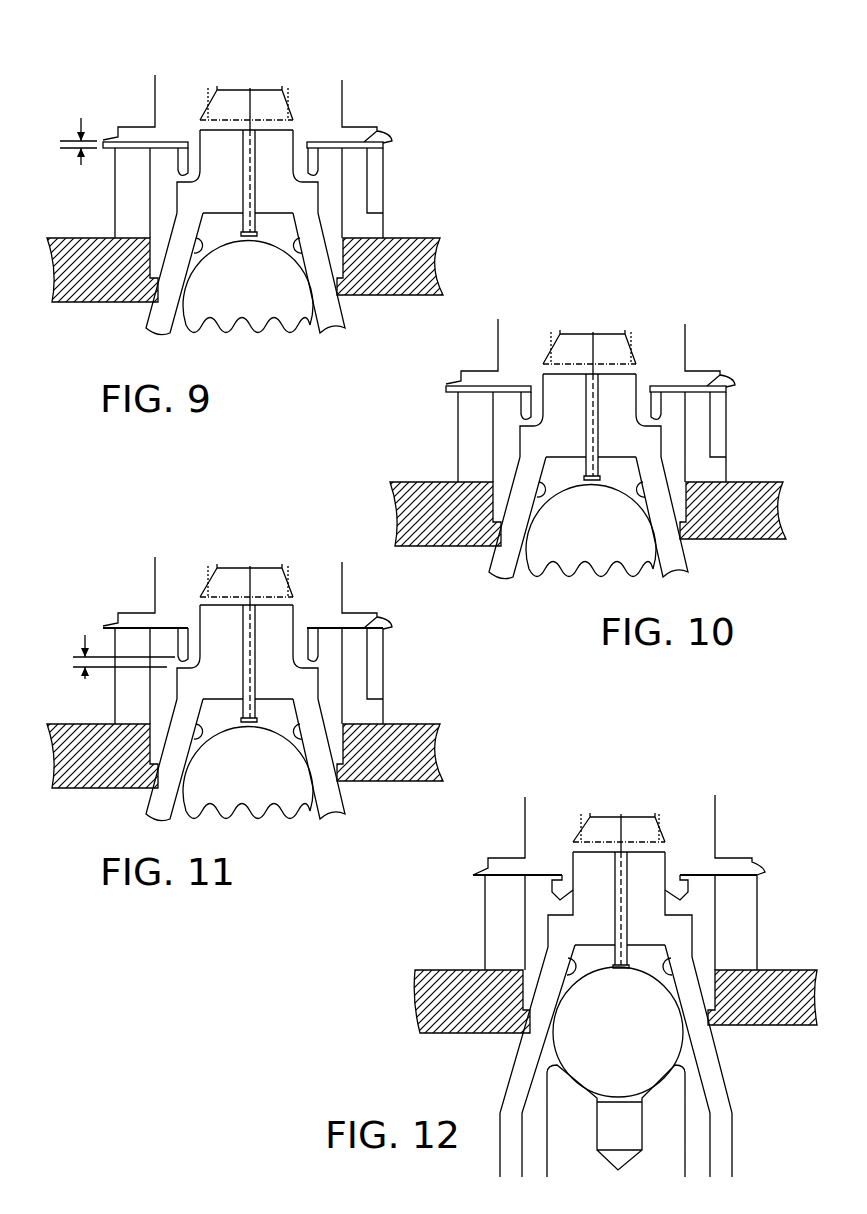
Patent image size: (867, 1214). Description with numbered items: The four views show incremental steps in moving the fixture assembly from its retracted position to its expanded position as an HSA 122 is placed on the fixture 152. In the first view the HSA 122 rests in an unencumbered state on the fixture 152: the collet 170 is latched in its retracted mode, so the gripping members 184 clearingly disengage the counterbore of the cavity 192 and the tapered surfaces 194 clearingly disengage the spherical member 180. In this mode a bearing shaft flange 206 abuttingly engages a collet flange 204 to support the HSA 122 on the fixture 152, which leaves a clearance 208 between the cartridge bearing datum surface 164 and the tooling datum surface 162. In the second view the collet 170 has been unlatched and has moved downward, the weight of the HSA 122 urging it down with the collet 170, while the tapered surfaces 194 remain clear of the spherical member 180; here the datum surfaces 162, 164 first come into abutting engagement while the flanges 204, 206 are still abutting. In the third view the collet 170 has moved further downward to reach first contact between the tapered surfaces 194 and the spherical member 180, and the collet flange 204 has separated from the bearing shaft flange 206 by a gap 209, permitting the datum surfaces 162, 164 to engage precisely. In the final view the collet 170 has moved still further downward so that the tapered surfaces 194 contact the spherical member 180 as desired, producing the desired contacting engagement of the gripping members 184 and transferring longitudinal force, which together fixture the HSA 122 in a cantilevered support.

In FIG. 9, the HSA 122 is at (351, 84).
In FIG. 10, the HSA 122 is at (694, 381).
In FIG. 9, the fixture 152 is at (354, 312).
In FIG. 9, the tooling datum surface 162 is at (373, 140).
In FIG. 10, the tooling datum surface 162 is at (752, 375).
In FIG. 9, the cartridge bearing datum surface 164 is at (158, 144).
In FIG. 10, the cartridge bearing datum surface 164 is at (495, 387).
In FIG. 9, the collet 170 is at (328, 236).
In FIG. 10, the collet 170 is at (608, 520).
In FIG. 11, the collet 170 is at (262, 763).
In FIG. 12, the collet 170 is at (619, 1016).
In FIG. 9, the spherical member 180 is at (265, 306).
In FIG. 10, the spherical member 180 is at (639, 536).
In FIG. 11, the spherical member 180 is at (293, 779).
In FIG. 12, the spherical member 180 is at (660, 1032).
In FIG. 9, the gripping members 184 is at (232, 157).
In FIG. 9, the cavity 192 is at (259, 82).
In FIG. 9, the tapered surfaces 194 is at (297, 264).
In FIG. 10, the tapered surfaces 194 is at (687, 472).
In FIG. 11, the tapered surfaces 194 is at (339, 711).
In FIG. 12, the tapered surfaces 194 is at (688, 944).
In FIG. 9, the collet flange 204 is at (317, 210).
In FIG. 10, the collet flange 204 is at (653, 415).
In FIG. 11, the collet flange 204 is at (309, 652).
In FIG. 9, the bearing shaft flange 206 is at (197, 170).
In FIG. 10, the bearing shaft flange 206 is at (529, 420).
In FIG. 11, the bearing shaft flange 206 is at (187, 664).
In FIG. 9, the clearance 208 is at (77, 131).
In FIG. 11, the gap 209 is at (119, 646).